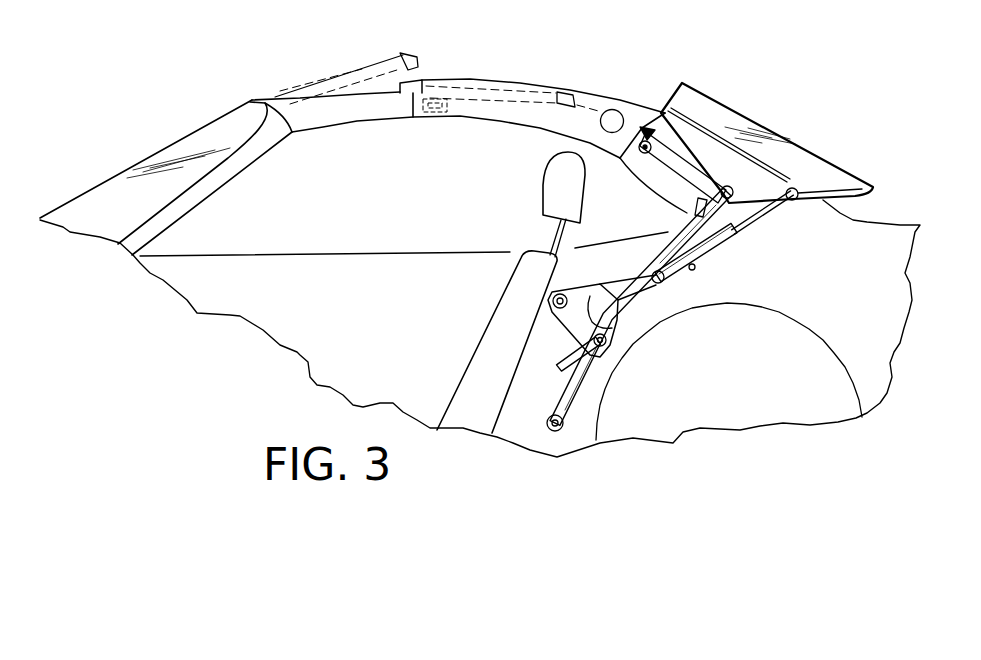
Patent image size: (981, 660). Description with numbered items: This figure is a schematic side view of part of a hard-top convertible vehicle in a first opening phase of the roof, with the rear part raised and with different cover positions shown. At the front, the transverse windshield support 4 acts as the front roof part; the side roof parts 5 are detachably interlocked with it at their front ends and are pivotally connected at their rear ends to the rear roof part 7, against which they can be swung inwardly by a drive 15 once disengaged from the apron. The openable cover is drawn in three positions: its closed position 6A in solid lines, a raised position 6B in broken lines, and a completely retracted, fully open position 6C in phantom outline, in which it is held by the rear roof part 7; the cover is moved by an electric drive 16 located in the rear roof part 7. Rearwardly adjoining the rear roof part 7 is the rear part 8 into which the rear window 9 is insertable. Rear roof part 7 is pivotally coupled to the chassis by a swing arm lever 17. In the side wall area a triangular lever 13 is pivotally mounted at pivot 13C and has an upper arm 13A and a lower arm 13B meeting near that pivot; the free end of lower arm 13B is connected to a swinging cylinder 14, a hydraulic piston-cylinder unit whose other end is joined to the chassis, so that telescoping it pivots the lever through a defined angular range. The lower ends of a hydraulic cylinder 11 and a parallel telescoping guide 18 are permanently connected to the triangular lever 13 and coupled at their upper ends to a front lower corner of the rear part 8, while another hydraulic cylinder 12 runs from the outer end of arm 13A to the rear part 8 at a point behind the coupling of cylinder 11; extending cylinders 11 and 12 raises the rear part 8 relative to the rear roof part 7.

The transverse windshield support 4 is at (268, 106).
The side roof parts 5 is at (362, 111).
The closed position of cover 6A is at (400, 88).
The raised position of cover 6B is at (354, 70).
The fully open position of cover 6C is at (496, 80).
The rear roof part 7 is at (547, 107).
The rear part 8 is at (697, 143).
The rear window 9 is at (754, 126).
The hydraulic cylinder 11 is at (640, 266).
The hydraulic cylinder 12 is at (738, 229).
The triangular lever 13 is at (560, 320).
The upper arm 13A is at (614, 293).
The lower arm 13B is at (618, 330).
The pivot 13C is at (552, 301).
The swinging cylinder 14 is at (594, 392).
The drive 15 is at (433, 113).
The electric drive 16 is at (615, 110).
The swing arm lever 17 is at (660, 155).
The telescoping guide 18 is at (636, 297).